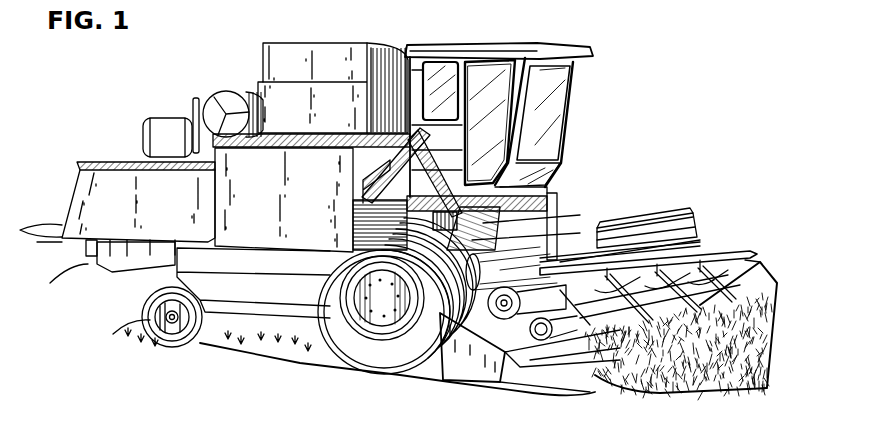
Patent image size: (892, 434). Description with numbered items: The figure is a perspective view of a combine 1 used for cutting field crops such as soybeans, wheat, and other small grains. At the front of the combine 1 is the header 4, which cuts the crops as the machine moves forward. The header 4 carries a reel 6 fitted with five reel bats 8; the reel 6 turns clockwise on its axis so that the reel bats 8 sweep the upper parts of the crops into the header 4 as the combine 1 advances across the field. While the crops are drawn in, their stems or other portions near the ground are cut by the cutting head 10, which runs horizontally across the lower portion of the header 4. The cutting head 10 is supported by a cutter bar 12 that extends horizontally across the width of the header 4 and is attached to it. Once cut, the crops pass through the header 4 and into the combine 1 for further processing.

The combine 1 is at (603, 33).
The header 4 is at (580, 222).
The reel 6 is at (647, 266).
The reel bats 8 is at (712, 252).
The cutting head 10 is at (570, 373).
The cutter bar 12 is at (588, 358).